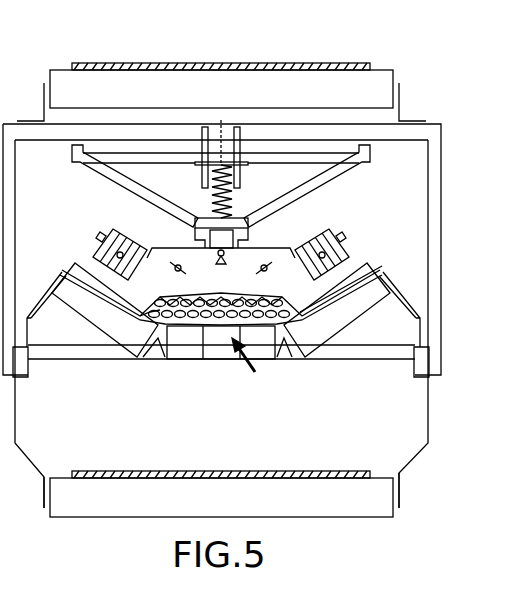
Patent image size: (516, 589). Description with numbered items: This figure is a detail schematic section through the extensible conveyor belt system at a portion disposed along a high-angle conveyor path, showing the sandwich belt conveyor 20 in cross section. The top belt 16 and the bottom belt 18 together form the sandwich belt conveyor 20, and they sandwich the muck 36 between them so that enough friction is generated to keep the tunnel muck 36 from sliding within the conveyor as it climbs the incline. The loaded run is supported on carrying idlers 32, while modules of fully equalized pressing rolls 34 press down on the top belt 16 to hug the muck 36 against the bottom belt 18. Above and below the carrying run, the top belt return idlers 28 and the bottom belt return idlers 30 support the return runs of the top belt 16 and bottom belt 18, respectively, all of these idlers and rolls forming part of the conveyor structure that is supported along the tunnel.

The top belt 16 is at (122, 63).
The bottom belt 18 is at (133, 472).
The sandwich belt conveyor 20 is at (258, 378).
The top belt return idlers 28 is at (328, 87).
The bottom belt return idlers 30 is at (190, 488).
The carrying idlers 32 is at (310, 342).
The pressing rolls 34 is at (117, 227).
The muck 36 is at (205, 322).